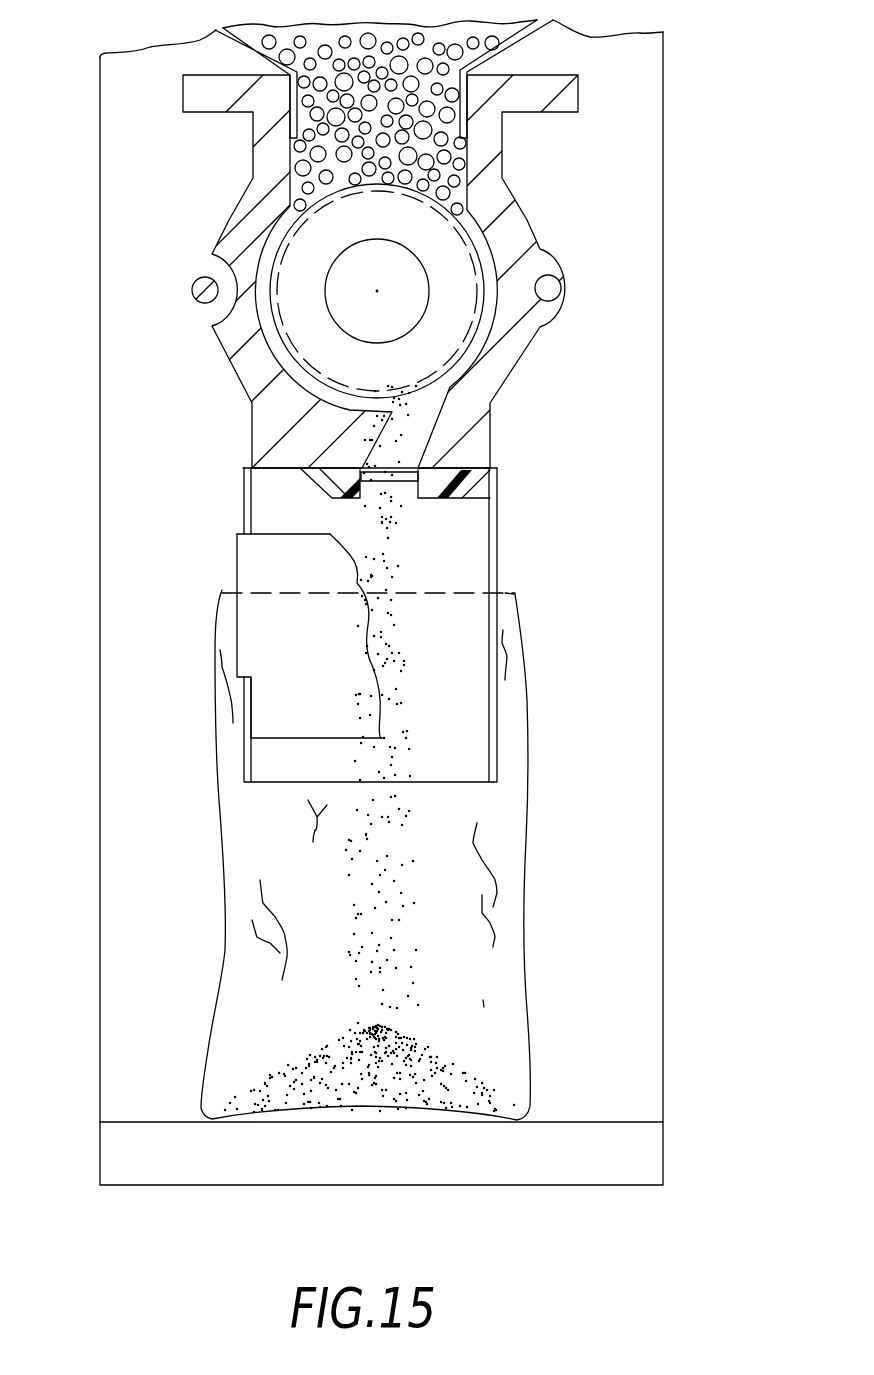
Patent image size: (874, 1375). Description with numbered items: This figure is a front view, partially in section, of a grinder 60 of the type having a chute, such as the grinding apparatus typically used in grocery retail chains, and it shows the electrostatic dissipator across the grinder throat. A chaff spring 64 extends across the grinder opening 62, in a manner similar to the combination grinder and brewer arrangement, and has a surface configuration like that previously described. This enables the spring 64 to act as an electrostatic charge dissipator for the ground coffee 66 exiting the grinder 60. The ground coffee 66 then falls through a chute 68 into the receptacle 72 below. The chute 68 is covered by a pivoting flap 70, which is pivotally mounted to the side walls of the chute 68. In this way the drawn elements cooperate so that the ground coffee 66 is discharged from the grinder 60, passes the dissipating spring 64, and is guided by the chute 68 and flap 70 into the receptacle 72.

The grinder 60 is at (592, 213).
The grinder opening 62 is at (383, 493).
The chaff spring 64 is at (397, 470).
The ground coffee 66 is at (393, 551).
The chute 68 is at (497, 577).
The pivoting flap 70 is at (245, 635).
The receptacle 72 is at (528, 750).